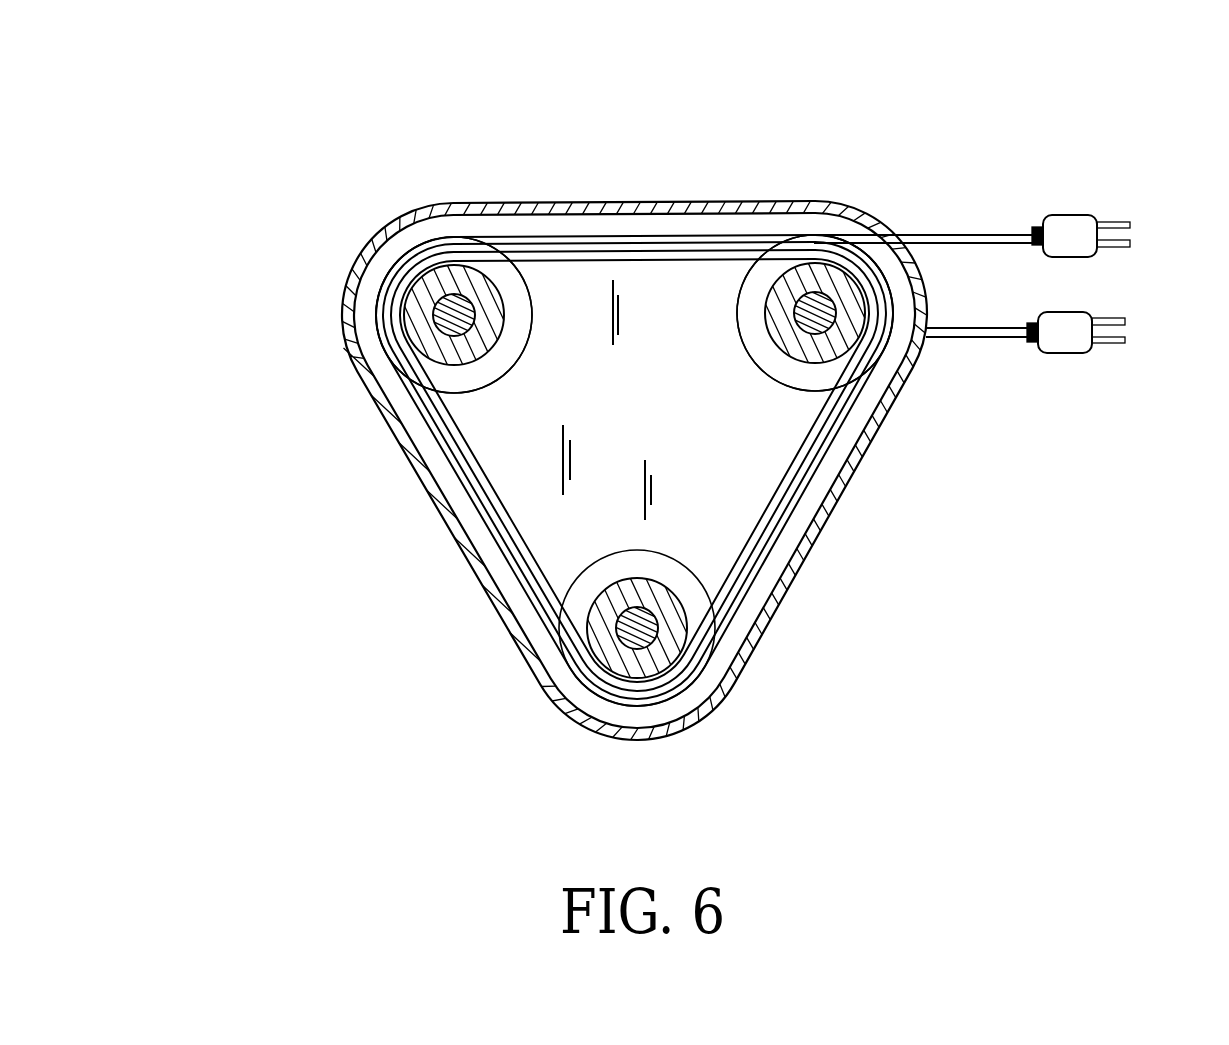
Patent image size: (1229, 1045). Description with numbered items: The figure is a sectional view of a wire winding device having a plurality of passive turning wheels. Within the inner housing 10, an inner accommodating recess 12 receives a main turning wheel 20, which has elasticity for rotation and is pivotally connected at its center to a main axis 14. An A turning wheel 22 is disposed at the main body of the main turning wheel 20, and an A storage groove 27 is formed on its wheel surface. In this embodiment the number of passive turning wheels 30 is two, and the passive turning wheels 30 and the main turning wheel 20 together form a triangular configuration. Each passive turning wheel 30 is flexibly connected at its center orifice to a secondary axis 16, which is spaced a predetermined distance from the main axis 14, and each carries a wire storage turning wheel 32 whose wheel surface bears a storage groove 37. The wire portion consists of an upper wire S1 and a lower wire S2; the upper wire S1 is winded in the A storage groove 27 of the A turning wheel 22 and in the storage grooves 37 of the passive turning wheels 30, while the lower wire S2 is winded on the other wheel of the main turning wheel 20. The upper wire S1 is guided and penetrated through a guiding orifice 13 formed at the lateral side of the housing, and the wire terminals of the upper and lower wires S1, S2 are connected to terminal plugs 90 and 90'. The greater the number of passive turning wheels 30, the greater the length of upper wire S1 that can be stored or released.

The inner housing 10 is at (800, 548).
The inner accommodating recess 12 is at (517, 455).
The guiding orifice 13 is at (886, 234).
The main axis 14 is at (838, 345).
The secondary axis 16 is at (446, 322).
The main turning wheel 20 is at (827, 268).
The A turning wheel 22 is at (810, 385).
The A storage groove 27 is at (763, 273).
The passive turning wheel 30 is at (478, 272).
The wire storage turning wheel 32 is at (412, 280).
The storage groove 37 is at (450, 378).
The terminal plug 90 is at (1111, 202).
The terminal plug 90' is at (1115, 360).
The upper wire S1 is at (619, 242).
The lower wire S2 is at (988, 328).